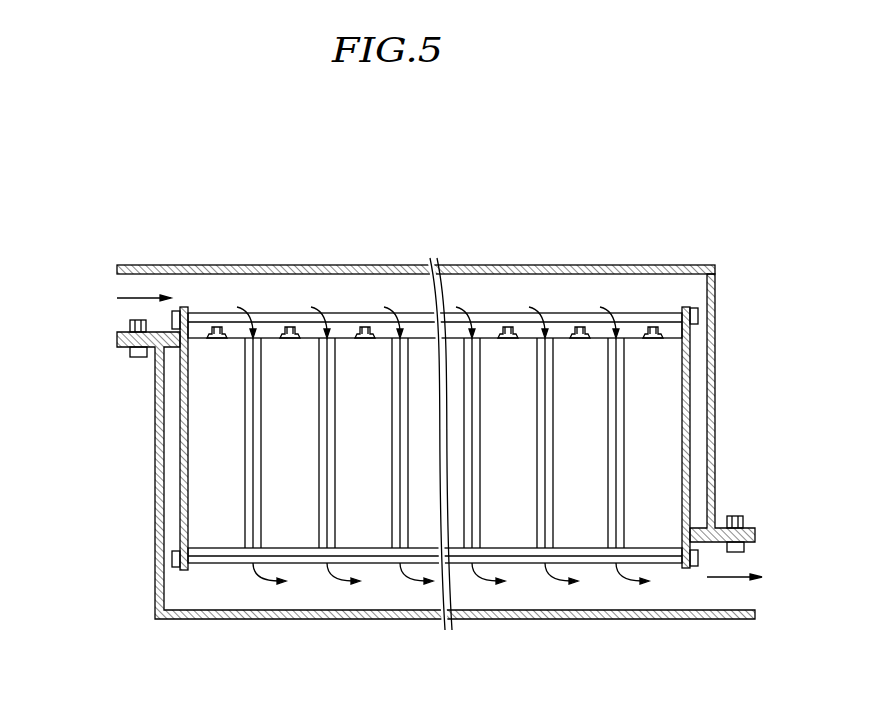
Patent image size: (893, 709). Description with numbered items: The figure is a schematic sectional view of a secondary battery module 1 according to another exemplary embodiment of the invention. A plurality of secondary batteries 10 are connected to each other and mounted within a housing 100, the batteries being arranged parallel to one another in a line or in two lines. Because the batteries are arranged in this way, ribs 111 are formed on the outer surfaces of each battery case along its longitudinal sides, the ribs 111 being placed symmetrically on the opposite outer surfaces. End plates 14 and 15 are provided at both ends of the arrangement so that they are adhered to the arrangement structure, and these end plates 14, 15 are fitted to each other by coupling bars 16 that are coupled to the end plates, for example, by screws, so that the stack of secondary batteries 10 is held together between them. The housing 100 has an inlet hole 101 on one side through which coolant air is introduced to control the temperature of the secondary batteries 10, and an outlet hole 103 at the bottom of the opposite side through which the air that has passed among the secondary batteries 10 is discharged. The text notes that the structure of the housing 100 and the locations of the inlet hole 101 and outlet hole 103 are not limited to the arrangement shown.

The secondary battery module 1 is at (387, 194).
The housing 100 is at (518, 265).
The inlet hole 101 is at (126, 288).
The outlet hole 103 is at (744, 594).
The secondary batteries 10 is at (522, 522).
The ribs 111 is at (633, 657).
The end plate 14 is at (180, 423).
The end plate 15 is at (690, 392).
The coupling bars 16 is at (643, 313).